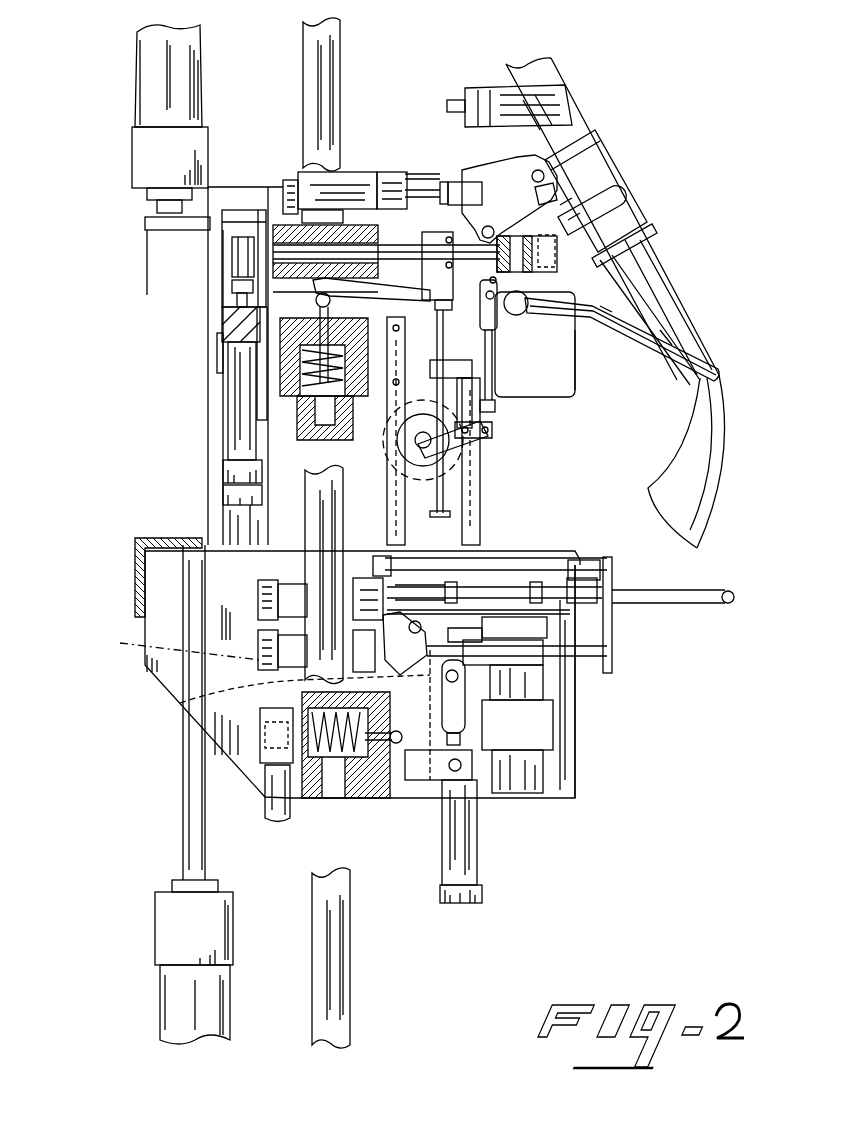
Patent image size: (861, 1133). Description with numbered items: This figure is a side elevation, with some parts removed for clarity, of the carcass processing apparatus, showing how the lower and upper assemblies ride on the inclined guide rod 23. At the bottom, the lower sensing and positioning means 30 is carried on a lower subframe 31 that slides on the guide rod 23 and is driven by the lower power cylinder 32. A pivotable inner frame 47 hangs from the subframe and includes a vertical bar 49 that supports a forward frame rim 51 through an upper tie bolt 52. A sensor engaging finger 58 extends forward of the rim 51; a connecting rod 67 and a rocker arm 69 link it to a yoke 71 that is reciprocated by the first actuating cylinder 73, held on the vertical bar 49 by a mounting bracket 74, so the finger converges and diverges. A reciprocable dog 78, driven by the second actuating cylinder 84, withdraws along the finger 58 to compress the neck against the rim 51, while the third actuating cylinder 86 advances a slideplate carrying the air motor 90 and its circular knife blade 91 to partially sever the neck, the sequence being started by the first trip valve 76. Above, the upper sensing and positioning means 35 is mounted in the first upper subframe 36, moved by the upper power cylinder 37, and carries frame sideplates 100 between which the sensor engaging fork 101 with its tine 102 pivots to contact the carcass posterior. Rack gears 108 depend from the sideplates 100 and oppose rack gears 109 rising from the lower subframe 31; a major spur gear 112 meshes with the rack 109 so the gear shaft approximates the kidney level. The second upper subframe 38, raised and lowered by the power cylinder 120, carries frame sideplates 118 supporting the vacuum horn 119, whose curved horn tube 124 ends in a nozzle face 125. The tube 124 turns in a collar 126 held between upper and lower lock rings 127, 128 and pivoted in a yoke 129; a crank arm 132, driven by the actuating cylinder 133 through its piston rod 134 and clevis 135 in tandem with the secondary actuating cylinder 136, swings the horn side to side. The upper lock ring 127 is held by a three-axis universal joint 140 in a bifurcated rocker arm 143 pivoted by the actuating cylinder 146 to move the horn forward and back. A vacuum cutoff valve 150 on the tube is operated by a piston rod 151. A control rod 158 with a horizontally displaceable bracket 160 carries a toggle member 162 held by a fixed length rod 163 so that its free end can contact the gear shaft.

The guide rod 23 is at (303, 62).
The lower sensing and positioning means 30 is at (613, 582).
The lower subframe 31 is at (580, 773).
The lower power cylinder 32 is at (160, 993).
The upper sensing and positioning means 35 is at (670, 337).
The first upper subframe 36 is at (577, 377).
The upper power cylinder 37 is at (130, 148).
The second upper subframe 38 is at (642, 230).
The pivotable inner frame 47 is at (613, 570).
The vertical bar 49 is at (437, 768).
The forward frame rim 51 is at (597, 622).
The upper tie bolt 52 is at (580, 560).
The sensor engaging finger 58 is at (615, 622).
The connecting rod 67 is at (513, 588).
The rocker arm 69 is at (180, 703).
The yoke 71 is at (590, 712).
The first actuating cylinder 73 is at (478, 858).
The mounting bracket 74 is at (477, 770).
The first trip valve 76 is at (397, 768).
The reciprocable dog 78 is at (733, 598).
The second actuating cylinder 84 is at (258, 603).
The third actuating cylinder 86 is at (258, 658).
The air motor 90 is at (543, 667).
The circular knife blade 91 is at (598, 612).
The frame sideplate 100 is at (554, 358).
The sensor engaging fork 101 is at (590, 320).
The tine 102 is at (667, 342).
The rack gear 108 is at (387, 475).
The rack gear 109 is at (478, 533).
The major spur gear 112 is at (450, 470).
The frame sideplate 118 is at (534, 229).
The vacuum horn 119 is at (680, 272).
The power cylinder 120 is at (223, 470).
The horn tube 124 is at (722, 443).
The nozzle face 125 is at (680, 500).
The collar 126 is at (610, 167).
The upper lock ring 127 is at (597, 133).
The lower lock ring 128 is at (637, 233).
The yoke 129 is at (615, 200).
The crank arm 132 is at (233, 240).
The actuating cylinder 133 is at (222, 342).
The piston rod 134 is at (225, 312).
The clevis 135 is at (232, 275).
The secondary actuating cylinder 136 is at (223, 495).
The three-axis universal joint 140 is at (513, 152).
The bifurcated rocker arm 143 is at (443, 189).
The actuating cylinder 146 is at (355, 170).
The vacuum cutoff valve 150 is at (560, 83).
The piston rod 151 is at (452, 98).
The control rod 158 is at (430, 490).
The horizontally displaceable bracket 160 is at (470, 373).
The toggle member 162 is at (460, 443).
The fixed length rod 163 is at (490, 358).